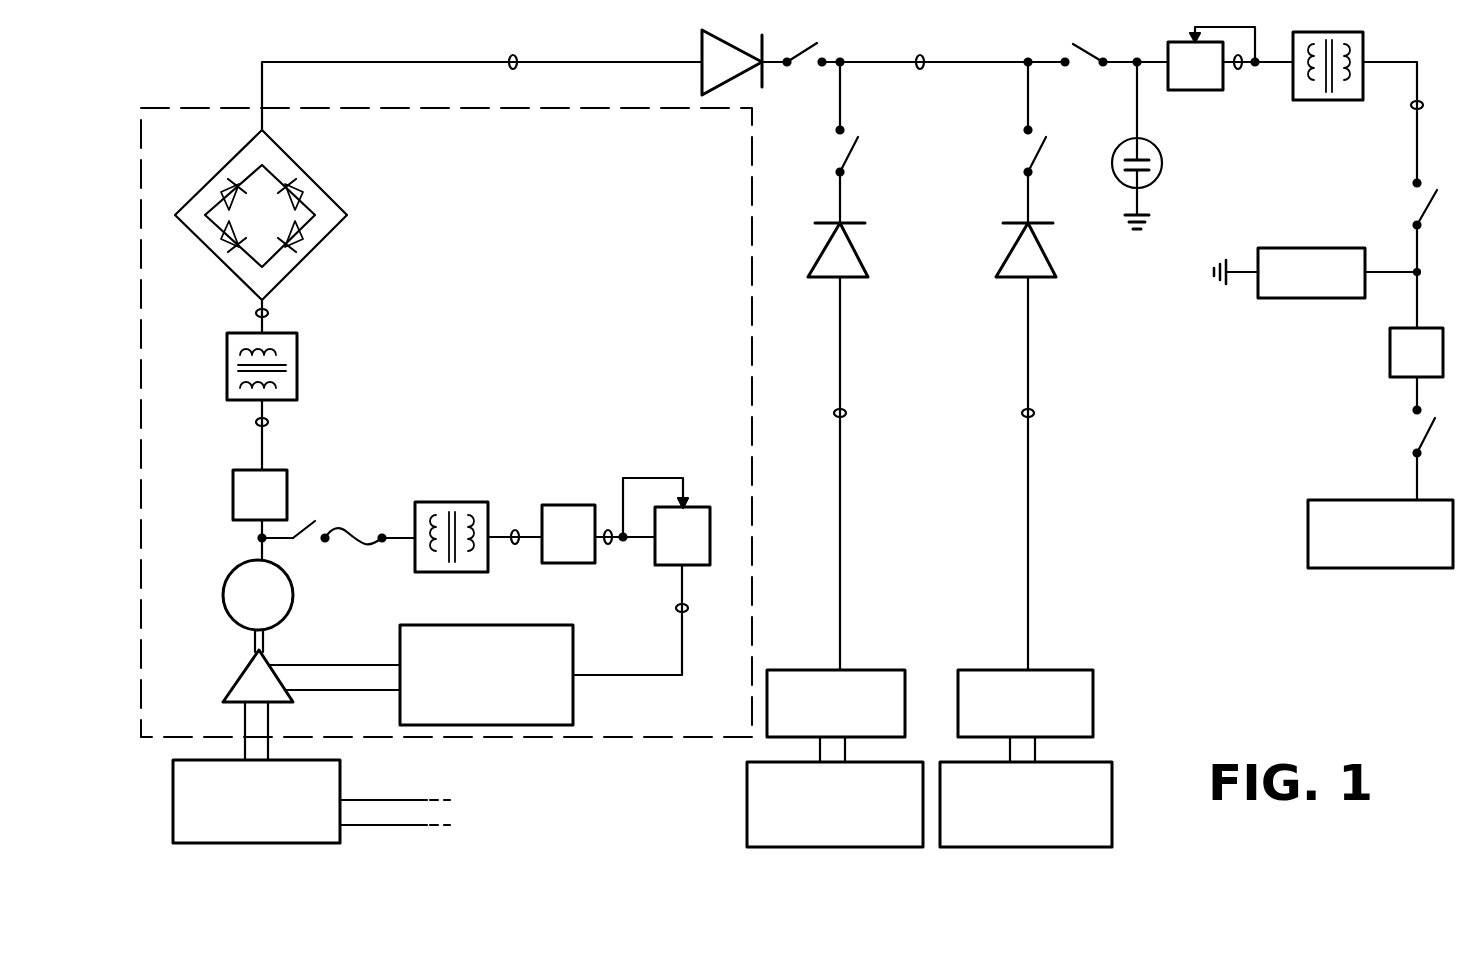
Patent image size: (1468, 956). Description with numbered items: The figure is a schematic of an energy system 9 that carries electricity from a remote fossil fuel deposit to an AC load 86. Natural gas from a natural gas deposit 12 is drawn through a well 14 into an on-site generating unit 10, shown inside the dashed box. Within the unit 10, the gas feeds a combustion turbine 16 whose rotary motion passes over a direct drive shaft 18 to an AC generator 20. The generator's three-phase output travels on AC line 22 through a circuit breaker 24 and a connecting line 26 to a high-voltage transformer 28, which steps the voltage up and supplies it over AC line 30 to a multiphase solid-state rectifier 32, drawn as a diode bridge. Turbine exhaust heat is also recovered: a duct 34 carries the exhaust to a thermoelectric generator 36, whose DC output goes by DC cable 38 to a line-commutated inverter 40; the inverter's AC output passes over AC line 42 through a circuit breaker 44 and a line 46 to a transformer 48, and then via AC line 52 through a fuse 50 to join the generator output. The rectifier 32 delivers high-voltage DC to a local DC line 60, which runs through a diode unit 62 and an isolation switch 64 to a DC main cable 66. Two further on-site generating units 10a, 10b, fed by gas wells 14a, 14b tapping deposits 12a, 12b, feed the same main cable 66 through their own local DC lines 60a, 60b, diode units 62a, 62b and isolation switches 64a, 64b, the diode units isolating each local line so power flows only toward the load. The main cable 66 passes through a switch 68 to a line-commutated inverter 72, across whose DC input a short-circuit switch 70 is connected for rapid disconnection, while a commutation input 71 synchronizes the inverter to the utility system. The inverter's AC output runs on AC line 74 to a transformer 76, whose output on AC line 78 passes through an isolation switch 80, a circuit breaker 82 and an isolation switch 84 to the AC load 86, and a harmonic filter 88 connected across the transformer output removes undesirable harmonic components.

The energy system 9 is at (1158, 483).
The on-site generating unit 10 is at (482, 254).
The on-site generating unit 10a is at (862, 670).
The on-site generating unit 10b is at (1082, 670).
The natural gas deposit 12 is at (340, 766).
The deposit 12a is at (747, 784).
The deposit 12b is at (1112, 775).
The well 14 is at (271, 711).
The gas well 14a is at (846, 742).
The gas well 14b is at (1038, 742).
The combustion turbine 16 is at (234, 680).
The direct drive shaft 18 is at (252, 643).
The AC generator 20 is at (298, 594).
The AC line 22 is at (256, 536).
The circuit breaker 24 is at (287, 472).
The line 26 is at (270, 422).
The high-voltage transformer 28 is at (297, 355).
The AC line 30 is at (256, 317).
The multiphase solid-state rectifier 32 is at (332, 164).
The duct 34 is at (322, 664).
The thermoelectric generator 36 is at (510, 625).
The DC cable 38 is at (682, 608).
The line-commutated inverter 40 is at (698, 500).
The AC line 42 is at (610, 544).
The circuit breaker 44 is at (562, 505).
The line 46 is at (515, 555).
The transformer 48 is at (456, 502).
The fuse 50 is at (354, 522).
The AC line 52 is at (300, 542).
The local high-voltage DC transmission cable 60 is at (515, 60).
The local DC cable 60a is at (846, 413).
The local DC cable 60b is at (1034, 413).
The diode unit 62 is at (702, 50).
The diode unit 62a is at (858, 248).
The diode unit 62b is at (1046, 248).
The isolation switch 64 is at (814, 52).
The isolation switch 64a is at (854, 162).
The isolation switch 64b is at (1042, 156).
The DC main cable 66 is at (916, 56).
The switch 68 is at (1086, 52).
The short-circuit switch 70 is at (1156, 180).
The commutation input 71 is at (1257, 50).
The line-commutated inverter 72 is at (1188, 90).
The AC line 74 is at (1240, 70).
The transformer 76 is at (1328, 100).
The AC line 78 is at (1423, 105).
The isolation switch 80 is at (1426, 208).
The circuit breaker 82 is at (1390, 351).
The isolation switch 84 is at (1428, 442).
The AC load 86 is at (1346, 500).
The harmonic filter 88 is at (1284, 248).